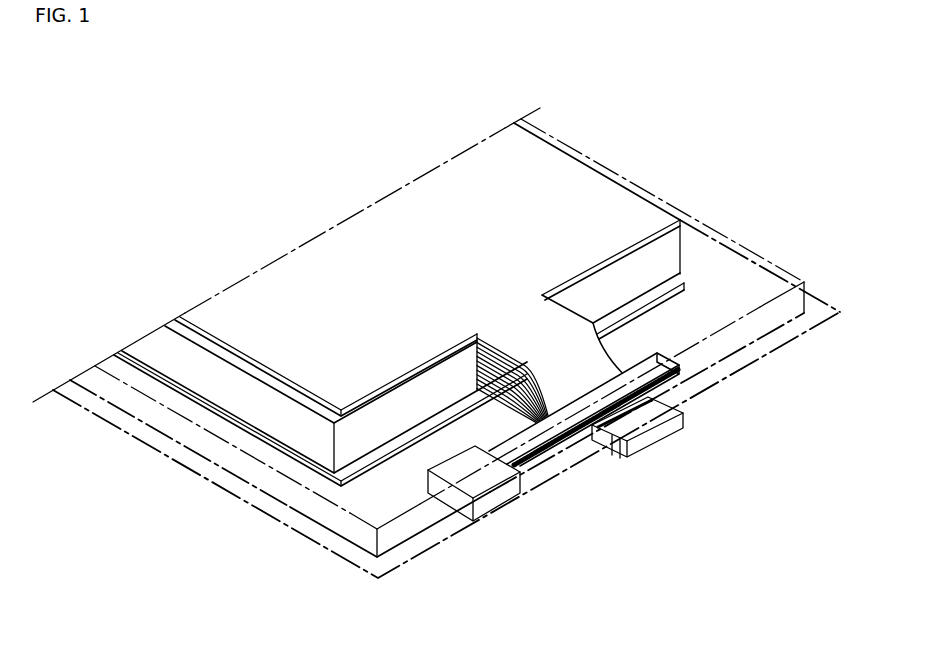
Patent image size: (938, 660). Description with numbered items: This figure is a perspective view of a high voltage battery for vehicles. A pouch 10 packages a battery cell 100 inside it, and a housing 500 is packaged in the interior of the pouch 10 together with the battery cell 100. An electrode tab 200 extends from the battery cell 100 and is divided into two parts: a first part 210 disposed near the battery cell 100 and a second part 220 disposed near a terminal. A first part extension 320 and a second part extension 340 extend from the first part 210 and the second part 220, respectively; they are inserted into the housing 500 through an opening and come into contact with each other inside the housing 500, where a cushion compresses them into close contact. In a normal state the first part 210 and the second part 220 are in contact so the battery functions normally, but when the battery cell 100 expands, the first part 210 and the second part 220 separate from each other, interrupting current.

The pouch 10 is at (302, 538).
The battery cell 100 is at (225, 388).
The electrode tab 200 is at (676, 448).
The first part 210 is at (575, 375).
The second part 220 is at (647, 455).
The first part extension 320 is at (680, 373).
The second part extension 340 is at (655, 357).
The housing 500 is at (492, 500).